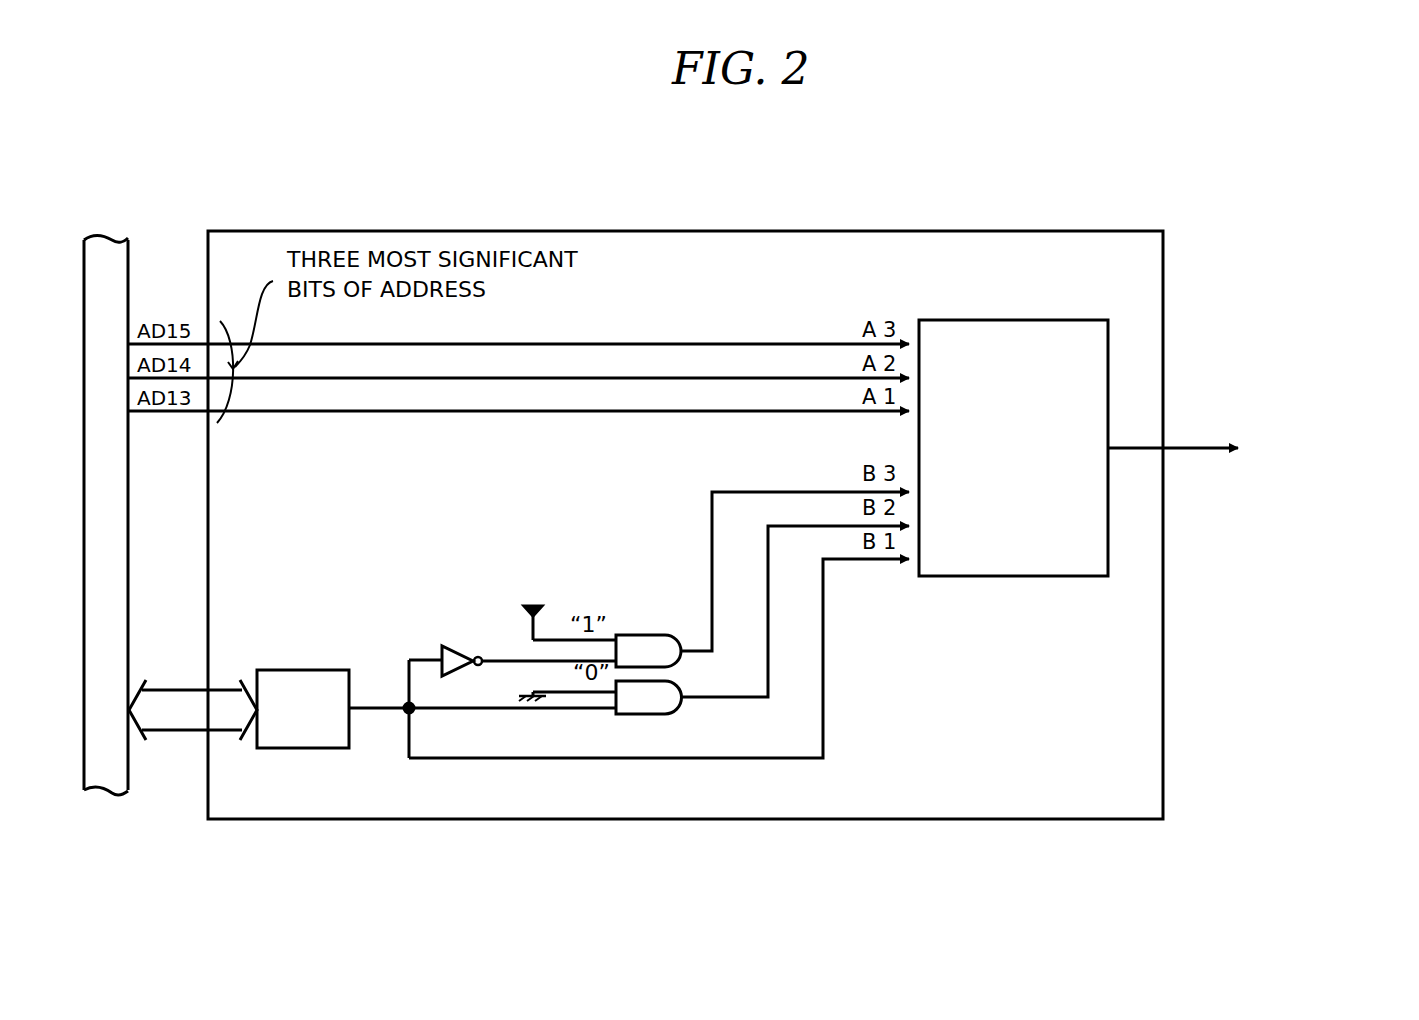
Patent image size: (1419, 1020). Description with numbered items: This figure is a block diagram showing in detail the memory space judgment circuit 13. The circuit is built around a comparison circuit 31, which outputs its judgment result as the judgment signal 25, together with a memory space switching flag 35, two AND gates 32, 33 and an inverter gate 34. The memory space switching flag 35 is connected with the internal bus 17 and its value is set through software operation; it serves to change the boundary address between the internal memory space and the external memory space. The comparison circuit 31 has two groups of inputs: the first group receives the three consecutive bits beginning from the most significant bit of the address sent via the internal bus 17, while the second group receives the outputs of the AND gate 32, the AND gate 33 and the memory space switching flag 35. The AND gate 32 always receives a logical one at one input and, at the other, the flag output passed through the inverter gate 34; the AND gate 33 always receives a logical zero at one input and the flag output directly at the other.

The memory space judgment circuit 13 is at (850, 231).
The internal bus 17 is at (129, 273).
The judgment signal 25 is at (1184, 448).
The comparison circuit 31 is at (1003, 320).
The AND gate 32 is at (641, 635).
The AND gate 33 is at (662, 714).
The inverter gate 34 is at (442, 658).
The memory space switching flag 35 is at (277, 670).